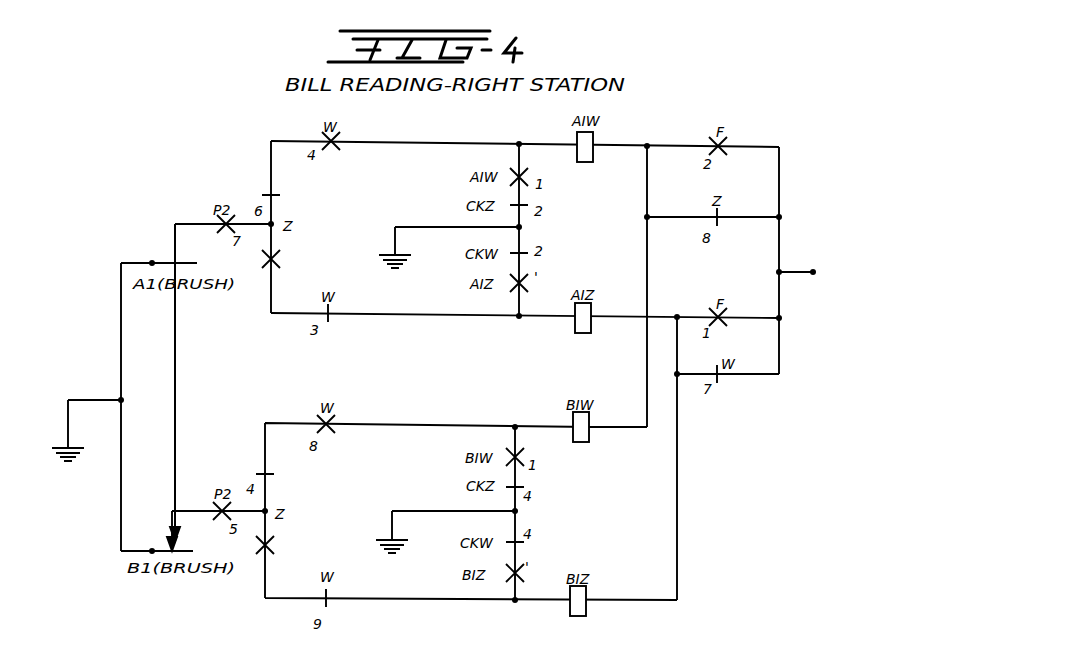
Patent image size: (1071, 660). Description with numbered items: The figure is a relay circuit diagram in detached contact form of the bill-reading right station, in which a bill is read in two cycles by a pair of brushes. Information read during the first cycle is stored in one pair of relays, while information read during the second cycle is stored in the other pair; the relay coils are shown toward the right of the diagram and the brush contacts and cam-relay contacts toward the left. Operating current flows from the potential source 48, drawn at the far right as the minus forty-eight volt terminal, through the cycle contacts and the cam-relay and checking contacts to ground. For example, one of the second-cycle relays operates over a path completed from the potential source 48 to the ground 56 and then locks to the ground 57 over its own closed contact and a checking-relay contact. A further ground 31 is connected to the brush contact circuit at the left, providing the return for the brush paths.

The ground connection 31 is at (68, 424).
The potential source 48 is at (815, 268).
The ground 56 is at (395, 247).
The ground 57 is at (392, 522).